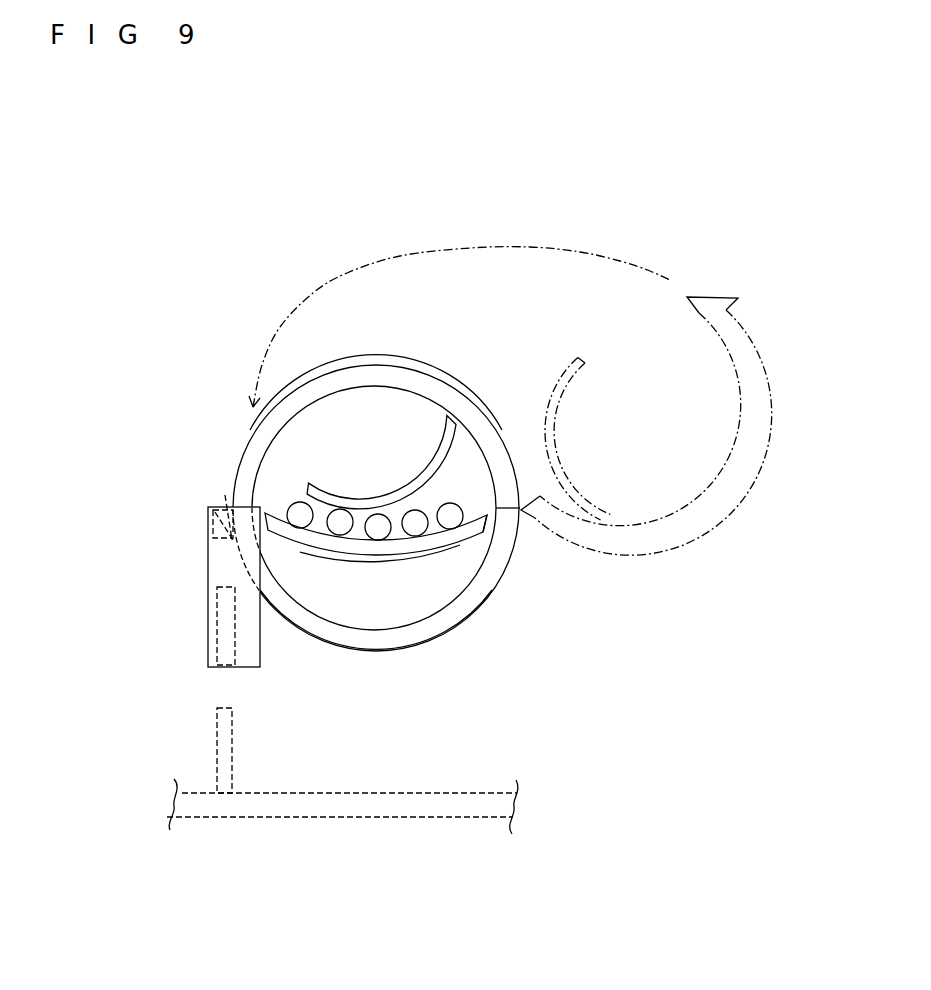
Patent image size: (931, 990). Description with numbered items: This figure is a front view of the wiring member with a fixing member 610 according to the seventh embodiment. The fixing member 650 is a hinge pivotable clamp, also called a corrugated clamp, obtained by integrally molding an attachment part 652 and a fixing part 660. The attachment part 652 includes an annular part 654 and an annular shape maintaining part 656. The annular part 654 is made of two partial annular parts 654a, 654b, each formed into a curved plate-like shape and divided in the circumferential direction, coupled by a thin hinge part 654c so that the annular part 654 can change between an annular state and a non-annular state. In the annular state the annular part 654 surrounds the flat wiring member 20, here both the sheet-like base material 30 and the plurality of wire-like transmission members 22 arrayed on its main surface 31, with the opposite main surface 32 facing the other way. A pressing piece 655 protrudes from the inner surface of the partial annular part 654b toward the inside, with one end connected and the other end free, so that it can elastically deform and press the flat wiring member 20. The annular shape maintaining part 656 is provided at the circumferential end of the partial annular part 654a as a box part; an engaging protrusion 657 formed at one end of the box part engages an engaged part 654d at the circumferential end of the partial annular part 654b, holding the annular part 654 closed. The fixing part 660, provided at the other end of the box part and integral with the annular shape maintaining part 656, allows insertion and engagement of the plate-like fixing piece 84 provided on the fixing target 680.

The wiring member with a fixing member 610 is at (222, 238).
The attachment part 652 is at (243, 437).
The annular part 654 is at (368, 651).
The partial annular part 654a is at (447, 622).
The partial annular part 654b is at (382, 373).
The hinge part 654c is at (520, 505).
The engaged part 654d is at (717, 300).
The pressing piece 655 is at (398, 497).
The flat wiring member 20 is at (423, 594).
The wire-like transmission members 22 is at (377, 531).
The base material 30 is at (403, 553).
The main surface 31 is at (484, 514).
The main surface 32 is at (442, 549).
The fixing member 650 is at (192, 623).
The fixing part 660 is at (218, 667).
The annular shape maintaining part 656 is at (210, 525).
The engaging protrusion 657 is at (225, 495).
The plate-like fixing piece 84 is at (226, 743).
The fixing target 680 is at (338, 820).